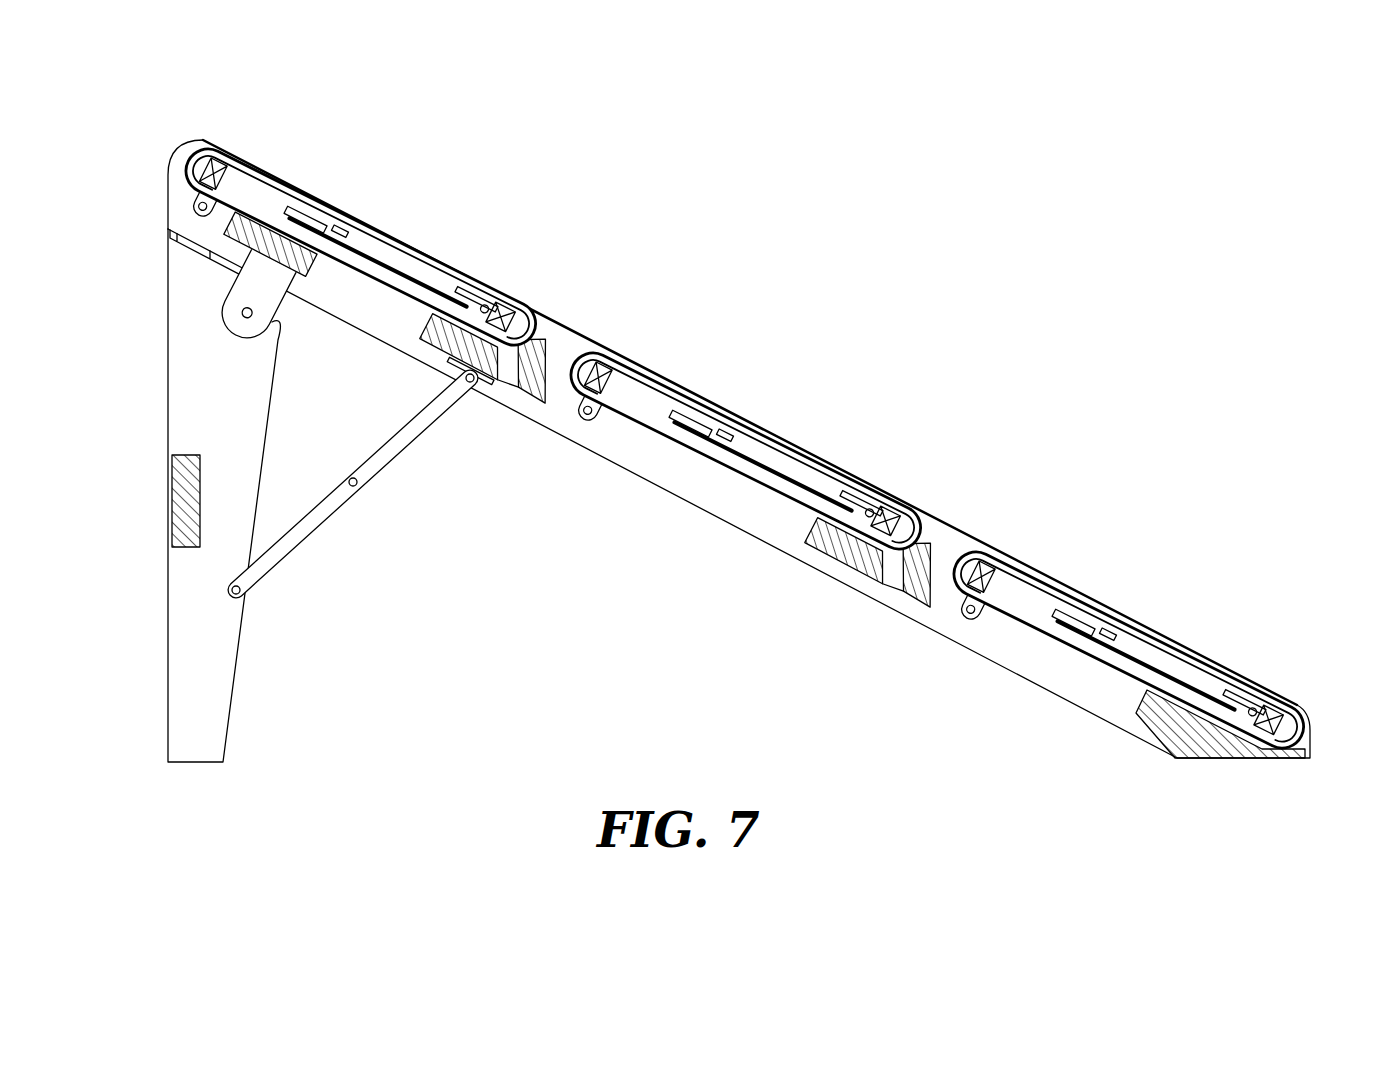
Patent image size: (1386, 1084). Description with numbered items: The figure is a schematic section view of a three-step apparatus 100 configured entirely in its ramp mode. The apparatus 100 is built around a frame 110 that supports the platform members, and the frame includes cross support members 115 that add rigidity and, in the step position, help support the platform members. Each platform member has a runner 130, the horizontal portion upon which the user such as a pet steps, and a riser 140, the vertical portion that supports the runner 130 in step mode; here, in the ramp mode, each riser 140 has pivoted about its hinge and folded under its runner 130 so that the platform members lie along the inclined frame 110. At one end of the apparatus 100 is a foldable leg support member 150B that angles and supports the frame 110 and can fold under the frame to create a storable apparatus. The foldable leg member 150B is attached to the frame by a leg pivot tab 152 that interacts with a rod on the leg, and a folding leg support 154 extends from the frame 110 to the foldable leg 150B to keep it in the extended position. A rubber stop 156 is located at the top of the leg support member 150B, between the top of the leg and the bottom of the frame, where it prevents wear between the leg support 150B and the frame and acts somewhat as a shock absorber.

The apparatus 100 is at (912, 291).
The frame 110 is at (1293, 733).
The cross support members 115 is at (532, 397).
The runner 130 is at (347, 220).
The riser 140 is at (398, 277).
The foldable leg support member 150B is at (182, 632).
The leg pivot tab 152 is at (232, 320).
The folding leg support 154 is at (327, 513).
The rubber stop 156 is at (178, 245).